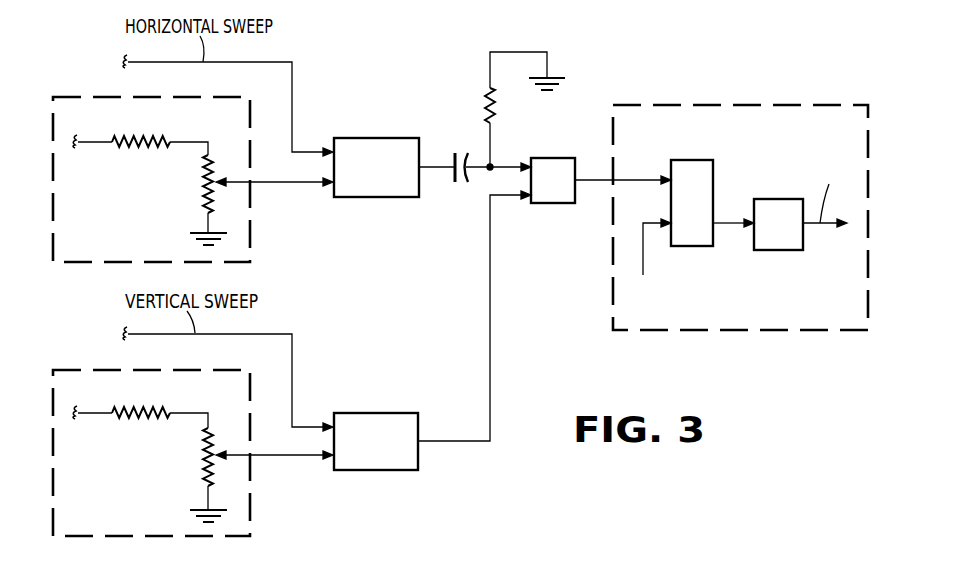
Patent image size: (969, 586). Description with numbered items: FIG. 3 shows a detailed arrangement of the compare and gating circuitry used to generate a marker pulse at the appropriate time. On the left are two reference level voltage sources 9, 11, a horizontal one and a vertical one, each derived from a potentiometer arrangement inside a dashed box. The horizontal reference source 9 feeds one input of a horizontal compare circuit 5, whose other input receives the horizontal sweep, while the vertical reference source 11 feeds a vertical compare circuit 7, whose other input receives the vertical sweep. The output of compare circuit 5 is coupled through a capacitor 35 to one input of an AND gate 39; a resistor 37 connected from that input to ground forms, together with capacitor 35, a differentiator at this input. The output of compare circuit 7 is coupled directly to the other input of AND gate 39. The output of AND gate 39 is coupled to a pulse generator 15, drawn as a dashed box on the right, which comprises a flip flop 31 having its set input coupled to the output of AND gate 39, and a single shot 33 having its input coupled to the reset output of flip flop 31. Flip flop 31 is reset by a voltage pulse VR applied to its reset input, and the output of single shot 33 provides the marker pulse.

The compare circuit 5 is at (358, 137).
The compare circuit 7 is at (357, 412).
The reference level voltage source 9 is at (101, 95).
The reference level voltage source 11 is at (101, 370).
The pulse generator 15 is at (667, 103).
The flip flop 31 is at (690, 160).
The single shot 33 is at (778, 251).
The capacitor 35 is at (455, 155).
The resistor 37 is at (497, 107).
The AND gate 39 is at (553, 204).